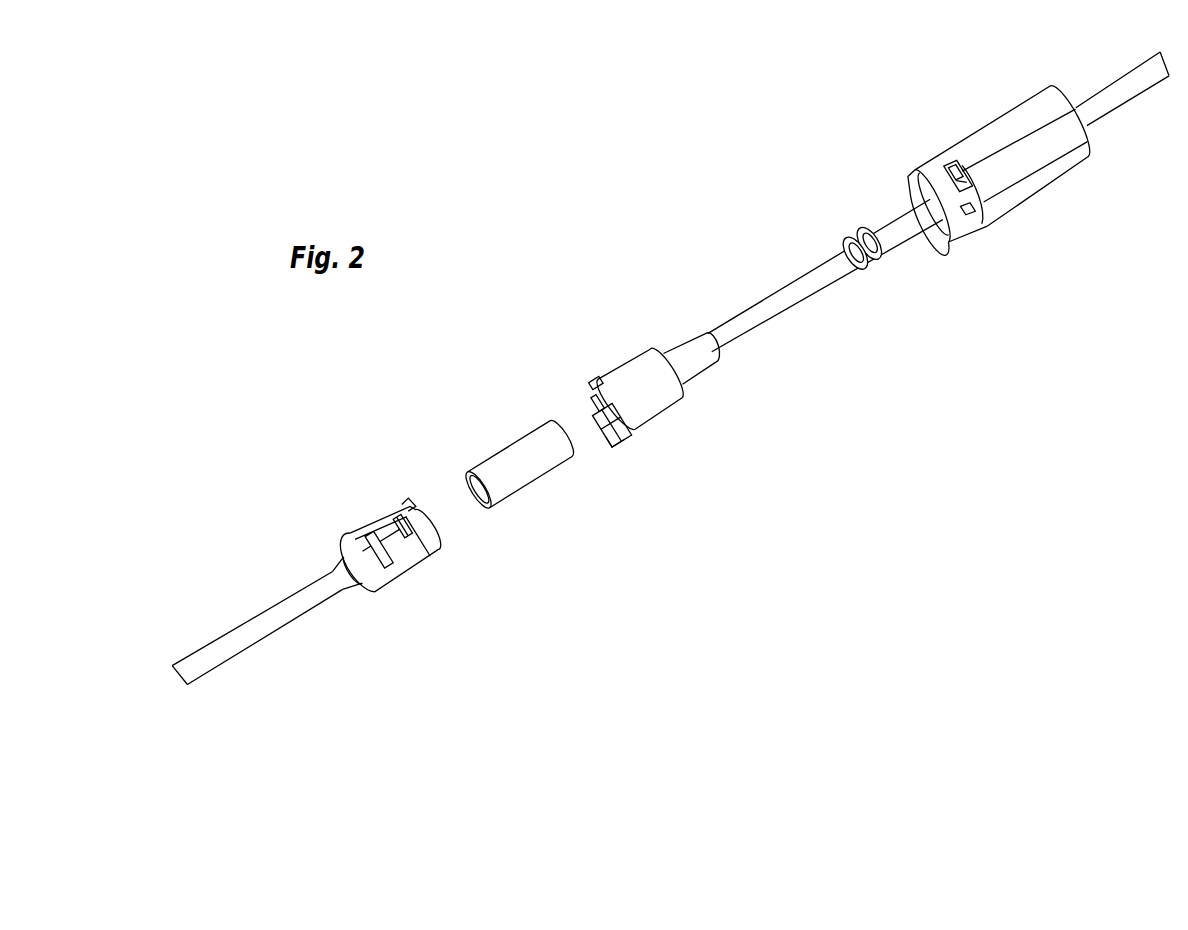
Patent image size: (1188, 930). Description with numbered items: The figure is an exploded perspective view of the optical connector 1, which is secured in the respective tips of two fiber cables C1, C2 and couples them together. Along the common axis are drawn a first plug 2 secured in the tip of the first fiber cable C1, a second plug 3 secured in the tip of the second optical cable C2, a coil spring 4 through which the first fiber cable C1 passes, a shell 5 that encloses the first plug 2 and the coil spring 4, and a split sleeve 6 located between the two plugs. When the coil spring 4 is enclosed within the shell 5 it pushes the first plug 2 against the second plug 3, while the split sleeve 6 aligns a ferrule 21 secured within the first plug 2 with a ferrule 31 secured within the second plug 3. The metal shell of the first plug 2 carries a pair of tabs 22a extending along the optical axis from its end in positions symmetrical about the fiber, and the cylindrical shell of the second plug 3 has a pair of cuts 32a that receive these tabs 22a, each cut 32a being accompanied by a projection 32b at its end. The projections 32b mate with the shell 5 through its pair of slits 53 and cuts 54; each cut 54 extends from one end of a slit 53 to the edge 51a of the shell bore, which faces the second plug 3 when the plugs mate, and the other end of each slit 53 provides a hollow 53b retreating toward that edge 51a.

The optical connector 1 is at (828, 87).
The first plug 2 is at (772, 308).
The second plug 3 is at (382, 549).
The coil spring 4 is at (862, 248).
The shell 5 is at (1009, 162).
The split sleeve 6 is at (520, 464).
The ferrule 21 is at (607, 418).
The tabs 22a is at (605, 411).
The ferrule 31 is at (393, 547).
The cuts 32a is at (408, 504).
The projections 32b is at (402, 525).
The edge 51a is at (932, 205).
The slits 53 is at (945, 203).
The hollow 53b is at (958, 176).
The cuts 54 is at (967, 208).
The first fiber cable C1 is at (1123, 89).
The second fiber cable C2 is at (257, 627).